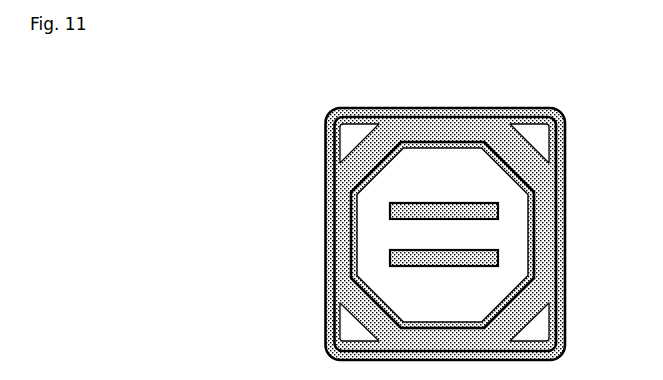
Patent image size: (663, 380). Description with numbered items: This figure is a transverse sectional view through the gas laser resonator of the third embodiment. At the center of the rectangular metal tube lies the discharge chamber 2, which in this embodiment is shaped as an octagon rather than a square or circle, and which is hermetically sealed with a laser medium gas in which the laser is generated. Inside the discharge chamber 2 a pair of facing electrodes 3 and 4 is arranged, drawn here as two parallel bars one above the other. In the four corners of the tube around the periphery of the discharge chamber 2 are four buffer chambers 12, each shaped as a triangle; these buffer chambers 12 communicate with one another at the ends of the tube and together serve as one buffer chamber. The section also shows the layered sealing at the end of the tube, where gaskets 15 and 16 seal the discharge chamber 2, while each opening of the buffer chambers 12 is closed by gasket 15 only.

The discharge chamber 2 is at (502, 189).
The electrode 3 is at (497, 207).
The electrode 4 is at (497, 255).
The buffer chamber 12 is at (353, 141).
The gasket 15 is at (353, 215).
The gasket 16 is at (333, 163).